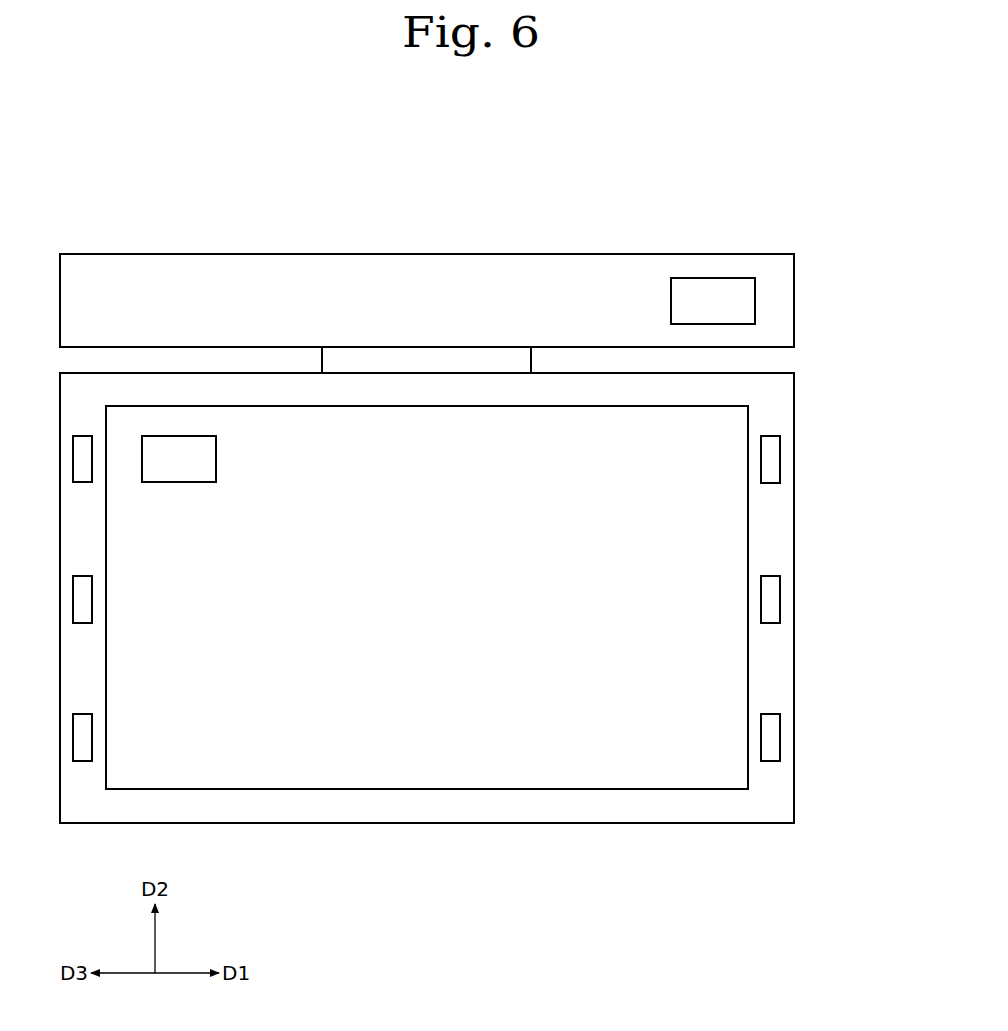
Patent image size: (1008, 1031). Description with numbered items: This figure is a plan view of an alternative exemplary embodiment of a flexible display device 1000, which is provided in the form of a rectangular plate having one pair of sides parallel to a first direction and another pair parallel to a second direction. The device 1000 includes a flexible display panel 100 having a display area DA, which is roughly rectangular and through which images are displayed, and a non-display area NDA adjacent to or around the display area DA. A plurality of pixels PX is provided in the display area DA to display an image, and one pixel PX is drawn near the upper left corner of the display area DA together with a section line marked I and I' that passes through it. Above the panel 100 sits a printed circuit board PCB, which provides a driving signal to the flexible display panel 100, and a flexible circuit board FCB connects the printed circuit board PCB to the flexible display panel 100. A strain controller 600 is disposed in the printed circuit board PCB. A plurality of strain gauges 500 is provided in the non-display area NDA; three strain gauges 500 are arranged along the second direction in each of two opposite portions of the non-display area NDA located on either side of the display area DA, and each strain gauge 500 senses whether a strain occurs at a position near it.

The flexible display device 1000 is at (625, 206).
The flexible display panel 100 is at (794, 401).
The strain gauge 500 is at (772, 458).
The strain controller 600 is at (722, 293).
The printed circuit board PCB is at (794, 299).
The flexible circuit board FCB is at (443, 363).
The display area DA is at (732, 688).
The non-display area NDA is at (778, 645).
The pixel PX is at (177, 483).
The section line I is at (176, 500).
The section line I' is at (238, 500).